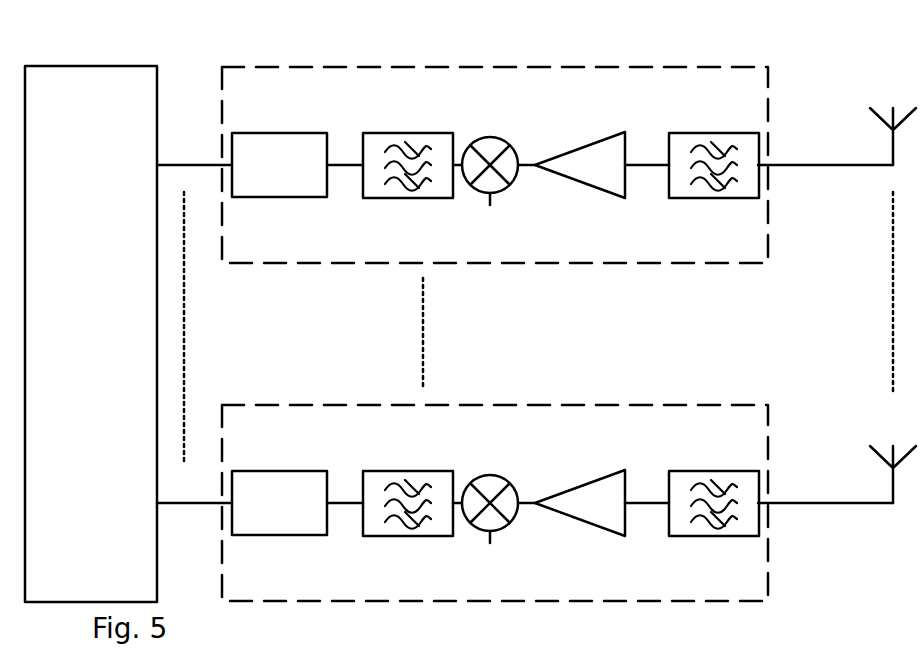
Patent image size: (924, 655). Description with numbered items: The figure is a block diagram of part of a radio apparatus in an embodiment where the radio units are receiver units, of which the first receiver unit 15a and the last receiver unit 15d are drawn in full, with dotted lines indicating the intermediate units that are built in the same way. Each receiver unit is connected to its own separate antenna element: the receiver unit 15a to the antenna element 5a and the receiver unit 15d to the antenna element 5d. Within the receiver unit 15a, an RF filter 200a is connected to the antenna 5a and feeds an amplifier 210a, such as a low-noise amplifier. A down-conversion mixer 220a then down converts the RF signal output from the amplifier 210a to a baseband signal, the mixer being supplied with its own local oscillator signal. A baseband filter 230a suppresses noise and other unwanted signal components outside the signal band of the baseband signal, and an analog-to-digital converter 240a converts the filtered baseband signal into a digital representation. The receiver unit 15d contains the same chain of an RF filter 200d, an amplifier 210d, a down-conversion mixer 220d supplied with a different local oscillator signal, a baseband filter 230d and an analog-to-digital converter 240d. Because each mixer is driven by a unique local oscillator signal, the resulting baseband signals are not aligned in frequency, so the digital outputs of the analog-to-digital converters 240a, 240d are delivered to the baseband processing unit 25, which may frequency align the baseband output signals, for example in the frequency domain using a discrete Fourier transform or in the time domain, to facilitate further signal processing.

The baseband processing unit 25 is at (91, 334).
The receiver unit 15a is at (566, 67).
The receiver unit 15d is at (566, 405).
The analog-to-digital converter 240a is at (279, 165).
The analog-to-digital converter 240d is at (279, 503).
The baseband filter 230a is at (405, 133).
The baseband filter 230d is at (405, 471).
The down-conversion mixer 220a is at (490, 137).
The down-conversion mixer 220d is at (490, 475).
The amplifier 210a is at (600, 190).
The amplifier 210d is at (600, 528).
The RF filter 200a is at (718, 198).
The RF filter 200d is at (718, 536).
The antenna element 5a is at (893, 148).
The antenna element 5d is at (893, 486).